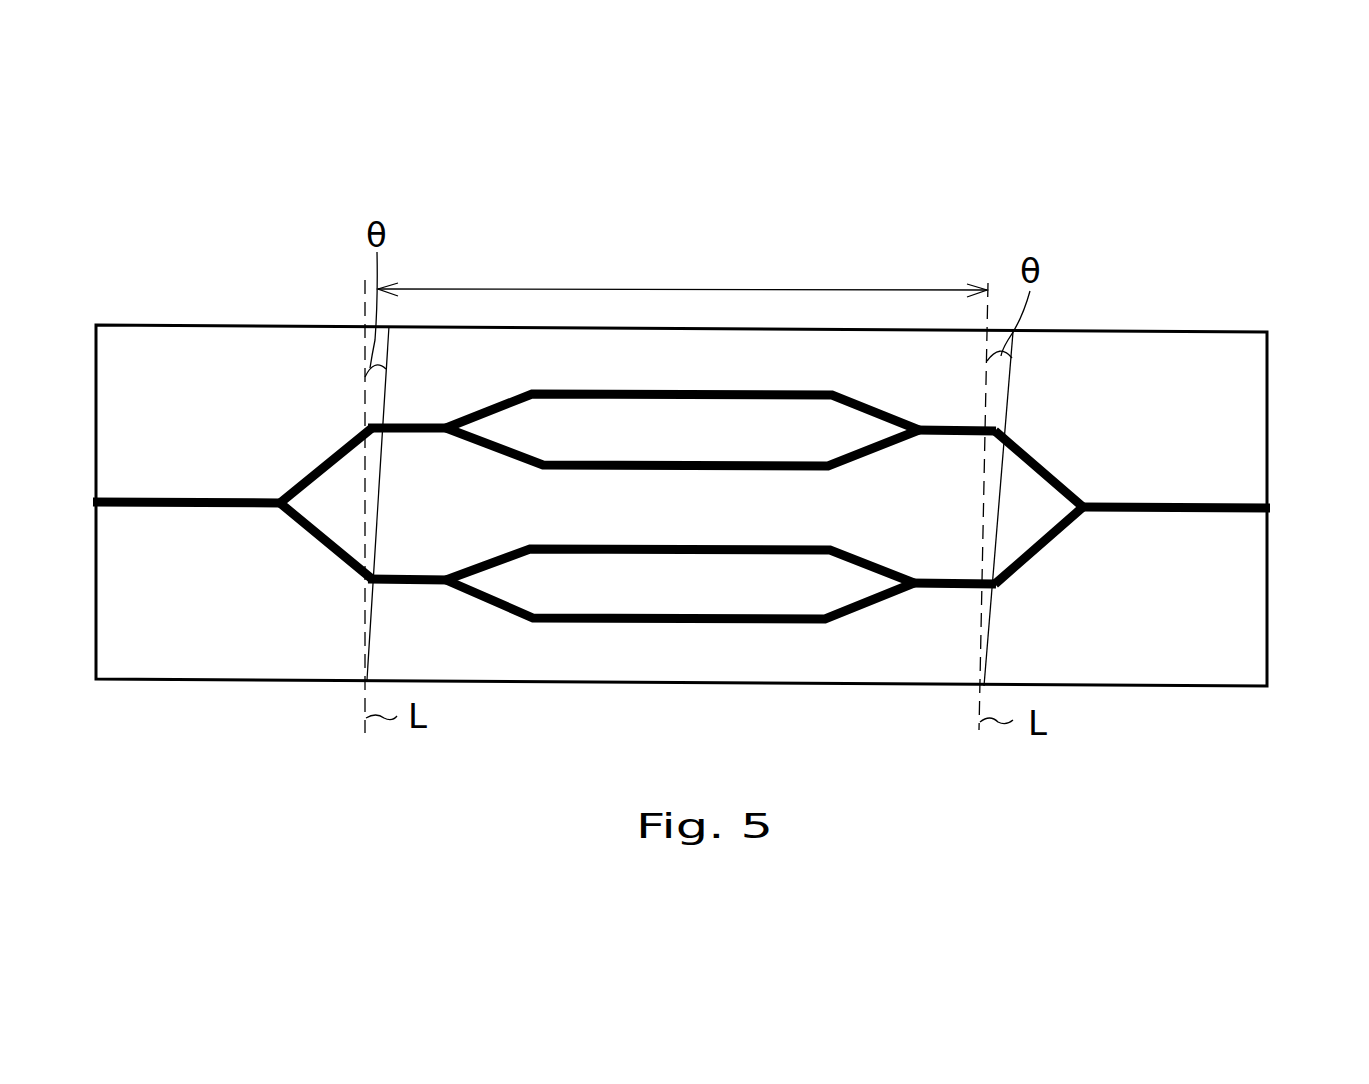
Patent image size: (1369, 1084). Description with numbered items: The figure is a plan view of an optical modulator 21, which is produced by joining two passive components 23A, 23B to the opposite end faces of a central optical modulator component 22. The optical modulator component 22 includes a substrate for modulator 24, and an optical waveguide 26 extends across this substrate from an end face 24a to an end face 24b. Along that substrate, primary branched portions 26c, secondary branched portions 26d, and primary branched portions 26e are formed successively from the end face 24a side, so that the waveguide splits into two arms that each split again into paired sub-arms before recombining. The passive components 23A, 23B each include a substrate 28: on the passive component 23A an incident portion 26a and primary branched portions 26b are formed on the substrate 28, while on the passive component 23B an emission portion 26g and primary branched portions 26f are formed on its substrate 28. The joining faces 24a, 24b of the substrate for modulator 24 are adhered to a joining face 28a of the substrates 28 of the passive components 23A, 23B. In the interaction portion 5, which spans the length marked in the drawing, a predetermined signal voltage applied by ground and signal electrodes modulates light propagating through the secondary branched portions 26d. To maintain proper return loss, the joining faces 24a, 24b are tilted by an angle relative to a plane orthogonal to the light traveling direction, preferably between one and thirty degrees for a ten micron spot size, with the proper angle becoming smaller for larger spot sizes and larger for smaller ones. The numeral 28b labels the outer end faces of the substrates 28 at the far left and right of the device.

The interaction portion 5 is at (751, 289).
The optical modulator 21 is at (1180, 297).
The optical modulator component 22 is at (697, 312).
The passive component 23A is at (247, 313).
The passive component 23B is at (1128, 327).
The substrate for modulator 24 is at (550, 337).
The end face 24a is at (385, 388).
The end face 24b is at (1015, 387).
The optical waveguide 26 is at (268, 455).
The incident portion 26a is at (172, 500).
The primary branched portions 26b is at (337, 455).
The primary branched portions 26c is at (417, 433).
The secondary branched portions 26d is at (695, 389).
The primary branched portions 26e is at (935, 424).
The primary branched portions 26f is at (1042, 460).
The emission portion 26g is at (1167, 505).
The substrate 28 is at (175, 333).
The joining face 28a is at (390, 397).
The end face 28b is at (97, 364).